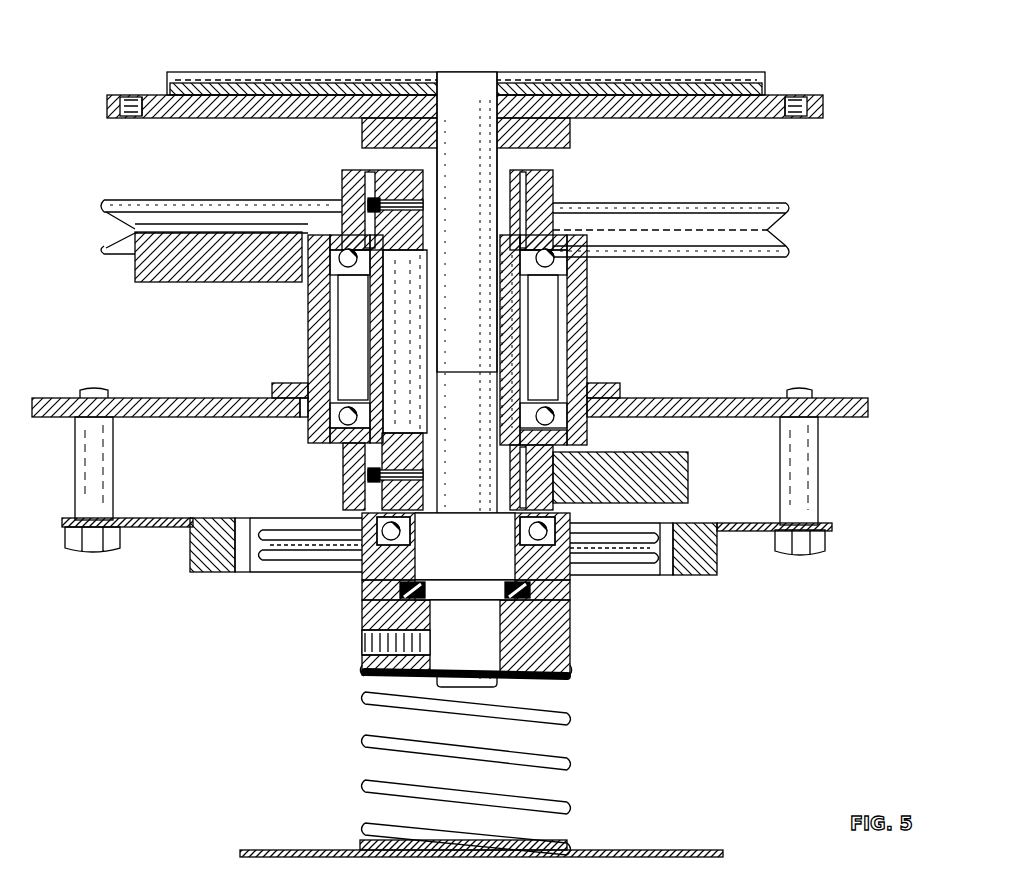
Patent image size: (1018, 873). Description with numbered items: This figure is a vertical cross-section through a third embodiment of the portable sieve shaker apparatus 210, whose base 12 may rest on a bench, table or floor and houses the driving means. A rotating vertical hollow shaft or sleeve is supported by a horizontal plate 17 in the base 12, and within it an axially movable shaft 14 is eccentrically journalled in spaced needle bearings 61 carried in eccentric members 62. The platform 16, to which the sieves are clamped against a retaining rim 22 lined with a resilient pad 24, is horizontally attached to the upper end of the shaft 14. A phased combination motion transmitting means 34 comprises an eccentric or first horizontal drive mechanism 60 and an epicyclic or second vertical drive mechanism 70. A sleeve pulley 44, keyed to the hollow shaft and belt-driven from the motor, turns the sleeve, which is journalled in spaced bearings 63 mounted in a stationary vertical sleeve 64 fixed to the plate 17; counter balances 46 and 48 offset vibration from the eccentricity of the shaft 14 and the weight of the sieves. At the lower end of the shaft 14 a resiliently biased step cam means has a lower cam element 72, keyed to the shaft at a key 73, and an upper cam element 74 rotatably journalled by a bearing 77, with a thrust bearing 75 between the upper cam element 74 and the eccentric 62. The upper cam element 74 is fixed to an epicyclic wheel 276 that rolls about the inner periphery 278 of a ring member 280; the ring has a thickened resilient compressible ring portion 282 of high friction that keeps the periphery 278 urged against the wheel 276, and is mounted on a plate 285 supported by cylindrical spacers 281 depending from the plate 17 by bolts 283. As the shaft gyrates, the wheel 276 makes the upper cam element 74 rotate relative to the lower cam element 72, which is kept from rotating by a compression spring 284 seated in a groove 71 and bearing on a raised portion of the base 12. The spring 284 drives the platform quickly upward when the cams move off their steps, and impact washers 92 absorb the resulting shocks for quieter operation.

The base 12 is at (612, 848).
The axially movable shaft 14 is at (467, 379).
The platform 16 is at (812, 96).
The horizontal plate 17 is at (170, 398).
The retaining rim 22 is at (754, 82).
The resilient pad 24 is at (548, 83).
The phased combination motion transmitting means 34 is at (755, 280).
The sleeve pulley 44 is at (740, 205).
The counter balance 46 is at (135, 268).
The counter balance 48 is at (688, 480).
The eccentric or first horizontal drive mechanism 60 is at (586, 187).
The needle bearing 61 is at (425, 208).
The eccentric member 62 is at (390, 172).
The bearing 63 is at (338, 265).
The stationary vertical sleeve 64 is at (308, 337).
The epicyclic or second vertical drive mechanism 70 is at (330, 598).
The groove 71 is at (572, 660).
The lower cam element 72 is at (572, 630).
The key 73 is at (362, 642).
The upper cam element 74 is at (560, 576).
The thrust bearing 75 is at (550, 520).
The bearing 77 is at (428, 542).
The impact washer 92 is at (437, 597).
The portable sieve shaker apparatus 210 is at (762, 700).
The epicyclic or planetary wheel 276 is at (300, 528).
The inner periphery 278 is at (240, 560).
The ring member 280 is at (205, 578).
The cylindrical spacer 281 is at (80, 458).
The resilient compressible ring portion 282 is at (216, 518).
The bolt 283 is at (100, 548).
The compression spring 284 is at (572, 760).
The plate 285 is at (62, 518).